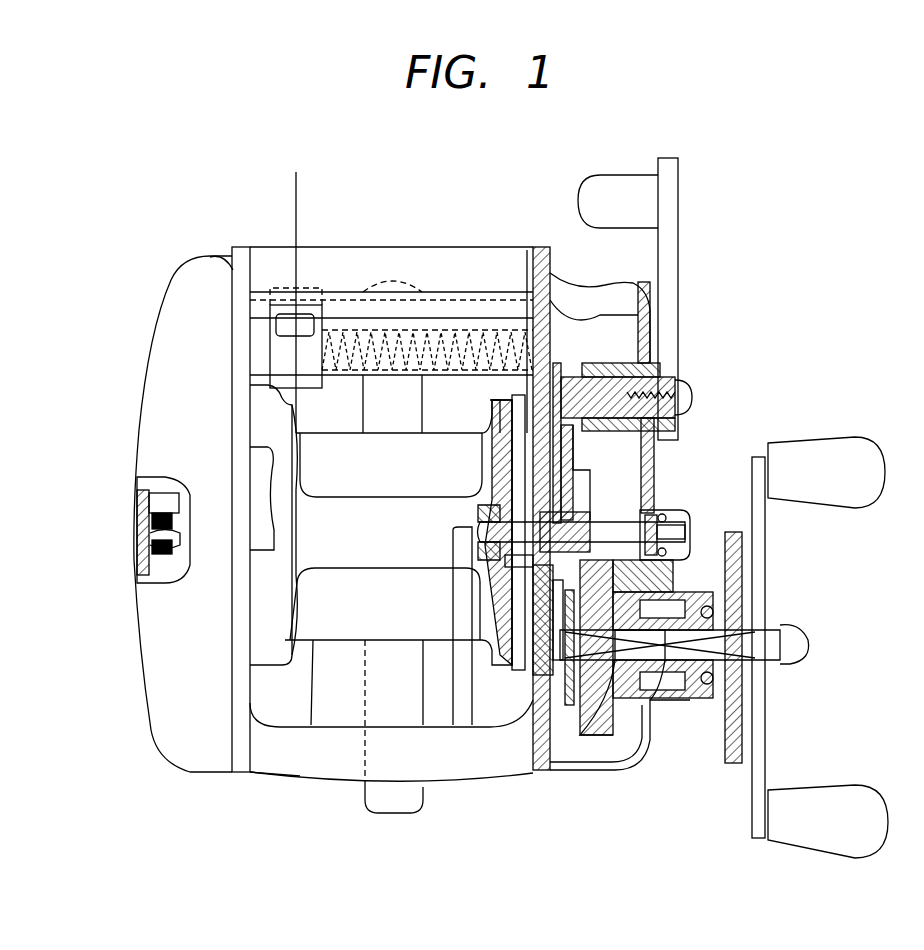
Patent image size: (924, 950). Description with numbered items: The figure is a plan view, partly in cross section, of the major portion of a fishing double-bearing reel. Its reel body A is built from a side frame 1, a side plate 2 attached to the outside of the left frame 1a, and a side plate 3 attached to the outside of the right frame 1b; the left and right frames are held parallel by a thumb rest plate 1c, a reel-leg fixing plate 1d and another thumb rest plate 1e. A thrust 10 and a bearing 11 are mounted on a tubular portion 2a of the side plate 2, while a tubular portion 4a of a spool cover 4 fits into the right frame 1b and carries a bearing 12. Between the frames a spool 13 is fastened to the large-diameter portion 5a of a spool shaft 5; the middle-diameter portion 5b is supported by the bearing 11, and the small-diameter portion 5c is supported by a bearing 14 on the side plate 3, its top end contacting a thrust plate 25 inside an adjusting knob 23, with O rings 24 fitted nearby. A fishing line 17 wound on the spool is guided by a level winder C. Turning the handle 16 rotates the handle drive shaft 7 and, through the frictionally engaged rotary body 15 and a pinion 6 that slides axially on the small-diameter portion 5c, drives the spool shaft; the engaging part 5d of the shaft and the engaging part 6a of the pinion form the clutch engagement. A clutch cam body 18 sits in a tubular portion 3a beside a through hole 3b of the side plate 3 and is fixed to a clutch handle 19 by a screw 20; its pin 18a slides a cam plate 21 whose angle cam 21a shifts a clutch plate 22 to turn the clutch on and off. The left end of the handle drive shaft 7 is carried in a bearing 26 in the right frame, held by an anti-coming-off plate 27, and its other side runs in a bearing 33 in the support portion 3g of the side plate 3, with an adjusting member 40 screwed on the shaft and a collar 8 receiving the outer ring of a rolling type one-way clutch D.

The side frame 1 is at (244, 243).
The left frame 1a is at (232, 268).
The right frame 1b is at (530, 440).
The thumb rest plate 1c is at (250, 443).
The reel-leg fixing plate 1d is at (314, 772).
The thumb rest plate 1e is at (274, 770).
The side plate 2 is at (176, 262).
The tubular portion 2a is at (140, 570).
The side plate 3 is at (655, 292).
The tubular portion 3a is at (600, 375).
The through hole 3b is at (655, 384).
The support portion 3g is at (636, 718).
The spool cover 4 is at (507, 440).
The tubular portion 4a is at (490, 438).
The spool shaft 5 is at (493, 776).
The large-diameter portion 5a is at (507, 776).
The middle-diameter portion 5b is at (162, 481).
The small-diameter portion 5c is at (640, 578).
The engaging part 5d is at (456, 778).
The pinion 6 is at (605, 508).
The engaging part 6a is at (473, 778).
The handle drive shaft 7 is at (800, 645).
The collar 8 is at (700, 700).
The thrust 10 is at (150, 521).
The bearing 11 is at (150, 549).
The bearing 12 is at (480, 440).
The spool 13 is at (437, 498).
The bearing 14 is at (600, 562).
The rotary body 15 is at (596, 742).
The handle 16 is at (767, 752).
The fishing line 17 is at (300, 197).
The clutch cam body 18 is at (562, 372).
The pin 18a is at (523, 438).
The clutch handle 19 is at (680, 244).
The screw 20 is at (694, 393).
The cam plate 21 is at (556, 378).
The angle cam 21a is at (656, 455).
The clutch plate 22 is at (575, 485).
The adjusting knob 23 is at (690, 522).
The O rings 24 is at (662, 508).
The thrust plate 25 is at (690, 539).
The bearing 26 is at (549, 778).
The anti-coming-off plate 27 is at (563, 778).
The bearing 33 is at (715, 612).
The adjusting member 40 is at (734, 766).
The reel body A is at (230, 232).
The level winder C is at (350, 325).
The rolling type one-way clutch D is at (668, 698).